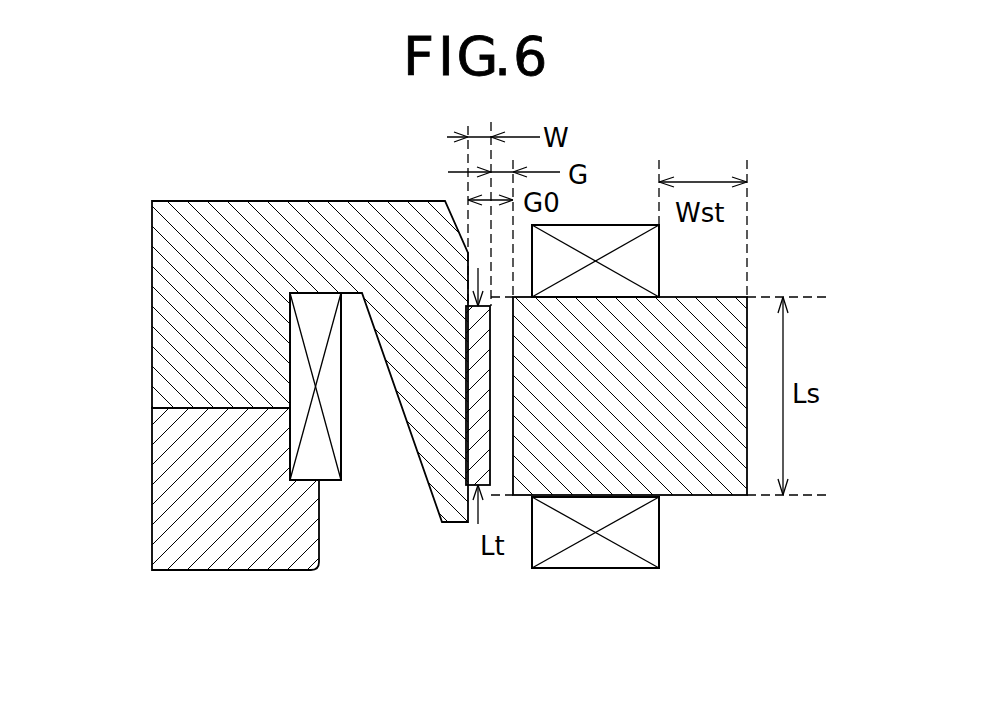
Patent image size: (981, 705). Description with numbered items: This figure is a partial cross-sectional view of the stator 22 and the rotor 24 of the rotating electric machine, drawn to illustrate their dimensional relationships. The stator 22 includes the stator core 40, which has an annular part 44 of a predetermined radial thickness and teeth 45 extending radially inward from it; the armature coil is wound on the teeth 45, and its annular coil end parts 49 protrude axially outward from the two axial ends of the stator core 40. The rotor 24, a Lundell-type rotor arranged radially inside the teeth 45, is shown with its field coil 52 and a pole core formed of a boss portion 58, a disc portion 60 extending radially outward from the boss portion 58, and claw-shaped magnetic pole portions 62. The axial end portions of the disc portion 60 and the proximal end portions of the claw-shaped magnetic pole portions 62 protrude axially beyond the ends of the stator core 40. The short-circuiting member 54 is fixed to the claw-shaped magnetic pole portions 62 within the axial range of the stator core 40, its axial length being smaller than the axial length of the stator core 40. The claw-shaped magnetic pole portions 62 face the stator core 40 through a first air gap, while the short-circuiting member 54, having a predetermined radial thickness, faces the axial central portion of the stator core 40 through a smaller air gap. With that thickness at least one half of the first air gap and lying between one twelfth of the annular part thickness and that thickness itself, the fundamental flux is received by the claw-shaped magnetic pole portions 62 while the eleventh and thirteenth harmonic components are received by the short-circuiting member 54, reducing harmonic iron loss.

The stator 22 is at (667, 538).
The rotor 24 is at (338, 580).
The stator core 40 is at (840, 528).
The annular part 44 is at (725, 423).
The teeth 45 is at (570, 442).
The coil end parts 49 is at (635, 263).
The field coil 52 is at (318, 458).
The short-circuiting member 54 is at (472, 374).
The boss portion 58 is at (173, 397).
The disc portion 60 is at (305, 230).
The claw-shaped magnetic pole portions 62 is at (450, 500).